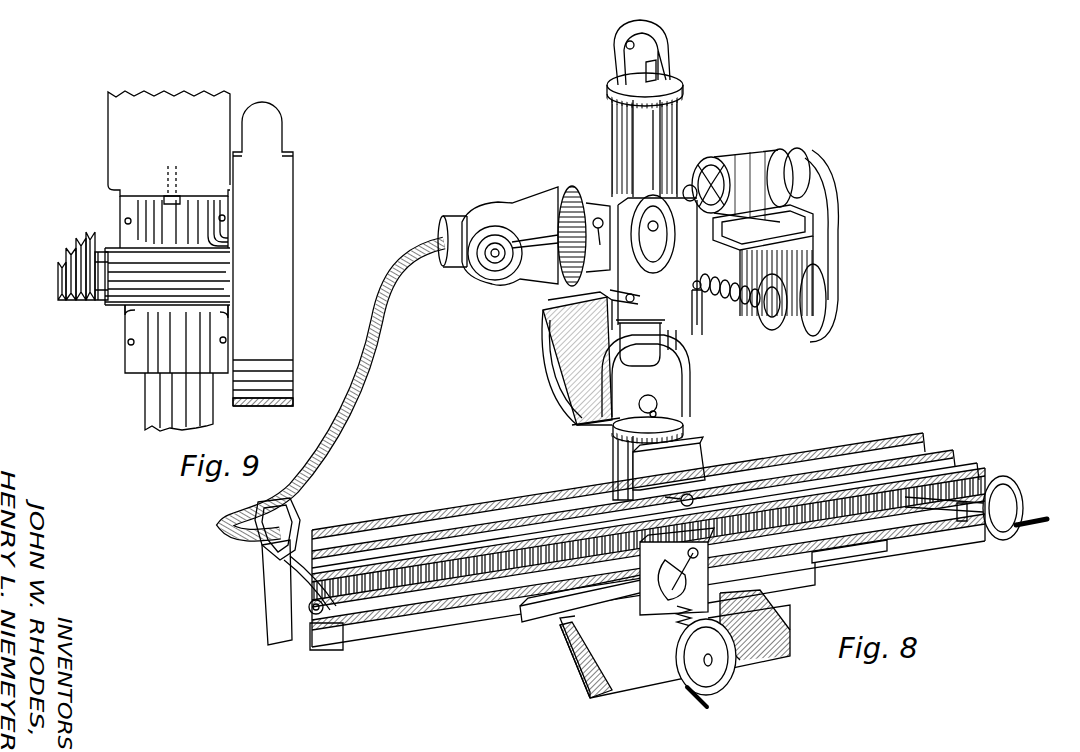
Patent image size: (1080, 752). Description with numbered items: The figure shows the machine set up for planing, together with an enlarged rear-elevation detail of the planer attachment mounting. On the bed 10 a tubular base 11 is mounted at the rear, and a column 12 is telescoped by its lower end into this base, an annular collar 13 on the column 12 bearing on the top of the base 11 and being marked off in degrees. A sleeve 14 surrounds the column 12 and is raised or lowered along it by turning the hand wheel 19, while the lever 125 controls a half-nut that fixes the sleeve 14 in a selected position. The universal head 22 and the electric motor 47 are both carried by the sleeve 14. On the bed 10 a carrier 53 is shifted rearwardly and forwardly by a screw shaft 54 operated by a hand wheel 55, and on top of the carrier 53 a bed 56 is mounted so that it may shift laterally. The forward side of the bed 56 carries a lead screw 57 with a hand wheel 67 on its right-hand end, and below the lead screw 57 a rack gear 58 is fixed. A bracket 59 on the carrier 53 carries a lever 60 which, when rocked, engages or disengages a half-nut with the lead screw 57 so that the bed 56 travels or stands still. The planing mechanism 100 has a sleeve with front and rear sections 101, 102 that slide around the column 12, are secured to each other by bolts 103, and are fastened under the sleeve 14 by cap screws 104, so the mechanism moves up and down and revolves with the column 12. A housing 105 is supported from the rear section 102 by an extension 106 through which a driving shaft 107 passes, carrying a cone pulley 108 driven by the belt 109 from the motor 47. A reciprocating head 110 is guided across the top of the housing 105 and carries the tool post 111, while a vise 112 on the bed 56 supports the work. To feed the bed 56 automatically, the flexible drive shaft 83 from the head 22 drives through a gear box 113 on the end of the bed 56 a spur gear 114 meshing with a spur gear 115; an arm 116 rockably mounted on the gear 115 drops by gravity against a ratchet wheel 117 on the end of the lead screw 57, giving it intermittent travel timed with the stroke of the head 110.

In FIG. 8, the bed 10 is at (658, 678).
In FIG. 8, the tubular base 11 is at (615, 434).
In FIG. 9, the column 12 is at (165, 408).
In FIG. 8, the column 12 is at (657, 158).
In FIG. 8, the annular collar 13 is at (684, 421).
In FIG. 9, the sleeve 14 is at (118, 139).
In FIG. 8, the sleeve 14 is at (740, 313).
In FIG. 8, the hand wheel 19 is at (614, 190).
In FIG. 8, the universal head 22 is at (498, 216).
In FIG. 8, the electric motor 47 is at (753, 173).
In FIG. 8, the carrier 53 is at (807, 586).
In FIG. 8, the screw shaft 54 is at (680, 616).
In FIG. 8, the hand wheel 55 is at (721, 695).
In FIG. 8, the bed 56 is at (426, 504).
In FIG. 8, the lead screw 57 is at (412, 600).
In FIG. 8, the rack gear 58 is at (867, 551).
In FIG. 8, the bracket 59 is at (563, 629).
In FIG. 8, the lever 60 is at (689, 553).
In FIG. 8, the hand wheel 67 is at (1028, 510).
In FIG. 8, the flexible drive shaft 83 is at (360, 358).
In FIG. 9, the planing mechanism 100 is at (285, 361).
In FIG. 8, the planing mechanism 100 is at (558, 372).
In FIG. 8, the front sleeve section 101 is at (676, 352).
In FIG. 9, the rear sleeve section 102 is at (160, 353).
In FIG. 9, the bolts 103 is at (124, 221).
In FIG. 9, the cap screws 104 is at (177, 197).
In FIG. 8, the cap screws 104 is at (640, 296).
In FIG. 9, the housing 105 is at (270, 280).
In FIG. 8, the housing 105 is at (557, 334).
In FIG. 9, the extension 106 is at (138, 292).
In FIG. 9, the driving shaft 107 is at (97, 289).
In FIG. 9, the cone pulley 108 is at (62, 283).
In FIG. 8, the cone pulley 108 is at (697, 363).
In FIG. 8, the belt 109 is at (702, 330).
In FIG. 9, the reciprocating head 110 is at (270, 133).
In FIG. 8, the reciprocating head 110 is at (547, 301).
In FIG. 8, the tool post 111 is at (607, 429).
In FIG. 8, the vise 112 is at (693, 460).
In FIG. 8, the gear box 113 is at (272, 563).
In FIG. 8, the spur gear 114 is at (289, 510).
In FIG. 8, the spur gear 115 is at (288, 590).
In FIG. 8, the arm 116 is at (307, 633).
In FIG. 8, the ratchet wheel 117 is at (330, 650).
In FIG. 8, the lever 125 is at (607, 197).